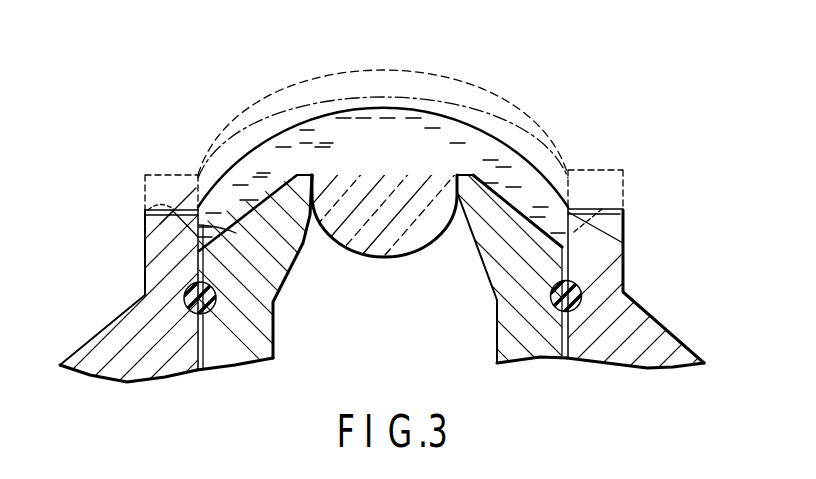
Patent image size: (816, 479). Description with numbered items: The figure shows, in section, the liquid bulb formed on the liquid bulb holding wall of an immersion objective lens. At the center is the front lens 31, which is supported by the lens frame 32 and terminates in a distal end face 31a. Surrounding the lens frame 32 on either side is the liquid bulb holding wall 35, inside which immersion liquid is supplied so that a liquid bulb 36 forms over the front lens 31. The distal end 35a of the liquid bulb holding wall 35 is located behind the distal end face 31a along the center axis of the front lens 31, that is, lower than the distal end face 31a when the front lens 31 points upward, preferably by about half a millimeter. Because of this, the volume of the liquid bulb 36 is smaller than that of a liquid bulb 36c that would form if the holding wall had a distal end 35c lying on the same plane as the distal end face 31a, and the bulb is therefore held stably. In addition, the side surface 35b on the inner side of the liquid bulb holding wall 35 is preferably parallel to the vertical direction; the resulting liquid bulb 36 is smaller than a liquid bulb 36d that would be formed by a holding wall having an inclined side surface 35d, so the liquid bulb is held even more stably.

The front lens 31 is at (414, 188).
The distal end face 31a is at (362, 174).
The lens frame 32 is at (496, 338).
The liquid bulb holding wall 35 is at (623, 268).
The distal end 35a is at (596, 210).
The side surface 35b is at (283, 277).
The distal end 35c is at (161, 172).
The inclined side surface 35d is at (143, 208).
The liquid bulb 36 is at (510, 143).
The liquid bulb 36c is at (402, 69).
The liquid bulb 36d is at (465, 103).